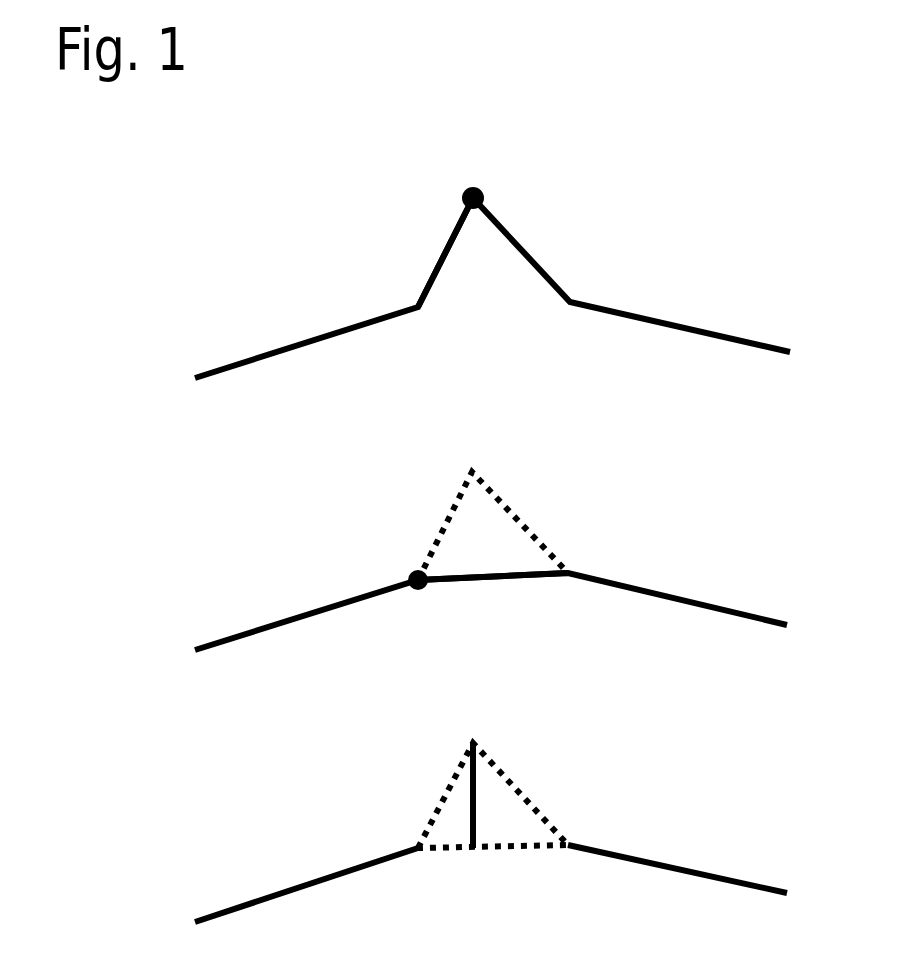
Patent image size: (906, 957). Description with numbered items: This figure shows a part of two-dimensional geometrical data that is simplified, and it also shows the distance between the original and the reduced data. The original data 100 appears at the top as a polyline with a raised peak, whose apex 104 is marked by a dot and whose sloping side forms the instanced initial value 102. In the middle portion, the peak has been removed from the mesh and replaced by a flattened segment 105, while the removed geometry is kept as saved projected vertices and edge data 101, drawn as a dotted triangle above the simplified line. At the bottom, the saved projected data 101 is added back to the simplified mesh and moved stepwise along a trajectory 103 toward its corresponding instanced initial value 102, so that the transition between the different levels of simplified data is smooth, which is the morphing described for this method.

The roof structure / base profile 100 is at (703, 290).
The saved projected vertices and edge data 101 is at (512, 490).
The instanced initial value 102 is at (428, 262).
The trajectory 103 is at (473, 800).
The peak point 104 is at (465, 190).
The horizontal segment 105 is at (512, 587).